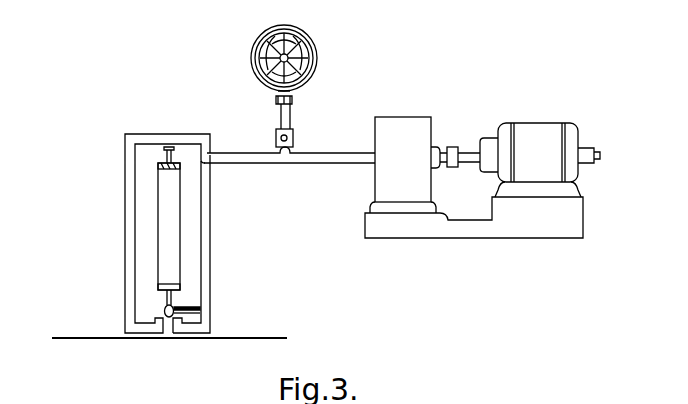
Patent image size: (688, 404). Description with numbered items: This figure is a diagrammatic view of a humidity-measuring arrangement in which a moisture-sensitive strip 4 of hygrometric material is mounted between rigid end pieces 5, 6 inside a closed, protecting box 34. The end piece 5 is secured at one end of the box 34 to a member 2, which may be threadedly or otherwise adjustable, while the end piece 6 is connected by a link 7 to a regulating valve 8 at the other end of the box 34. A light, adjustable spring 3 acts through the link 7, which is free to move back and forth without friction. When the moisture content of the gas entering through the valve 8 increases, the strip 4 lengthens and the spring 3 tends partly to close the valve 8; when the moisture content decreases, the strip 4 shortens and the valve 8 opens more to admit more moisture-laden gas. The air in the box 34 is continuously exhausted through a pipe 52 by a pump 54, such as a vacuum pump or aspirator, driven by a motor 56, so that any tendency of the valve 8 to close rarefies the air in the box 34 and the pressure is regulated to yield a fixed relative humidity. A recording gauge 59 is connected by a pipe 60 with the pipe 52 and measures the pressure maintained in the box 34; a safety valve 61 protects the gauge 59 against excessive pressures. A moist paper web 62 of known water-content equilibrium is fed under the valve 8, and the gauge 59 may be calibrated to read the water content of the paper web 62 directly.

The member 2 is at (172, 150).
The adjustable spring 3 is at (193, 306).
The moisture-sensitive strip 4 is at (160, 219).
The end piece 5 is at (162, 167).
The end piece 6 is at (160, 290).
The link 7 is at (166, 300).
The valve 8 is at (175, 314).
The box 34 is at (197, 226).
The pipe 52 is at (285, 164).
The pump 54 is at (398, 118).
The motor 56 is at (525, 125).
The recording gauge 59 is at (312, 46).
The pipe 60 is at (292, 111).
The safety valve 61 is at (294, 139).
The paper web 62 is at (116, 340).